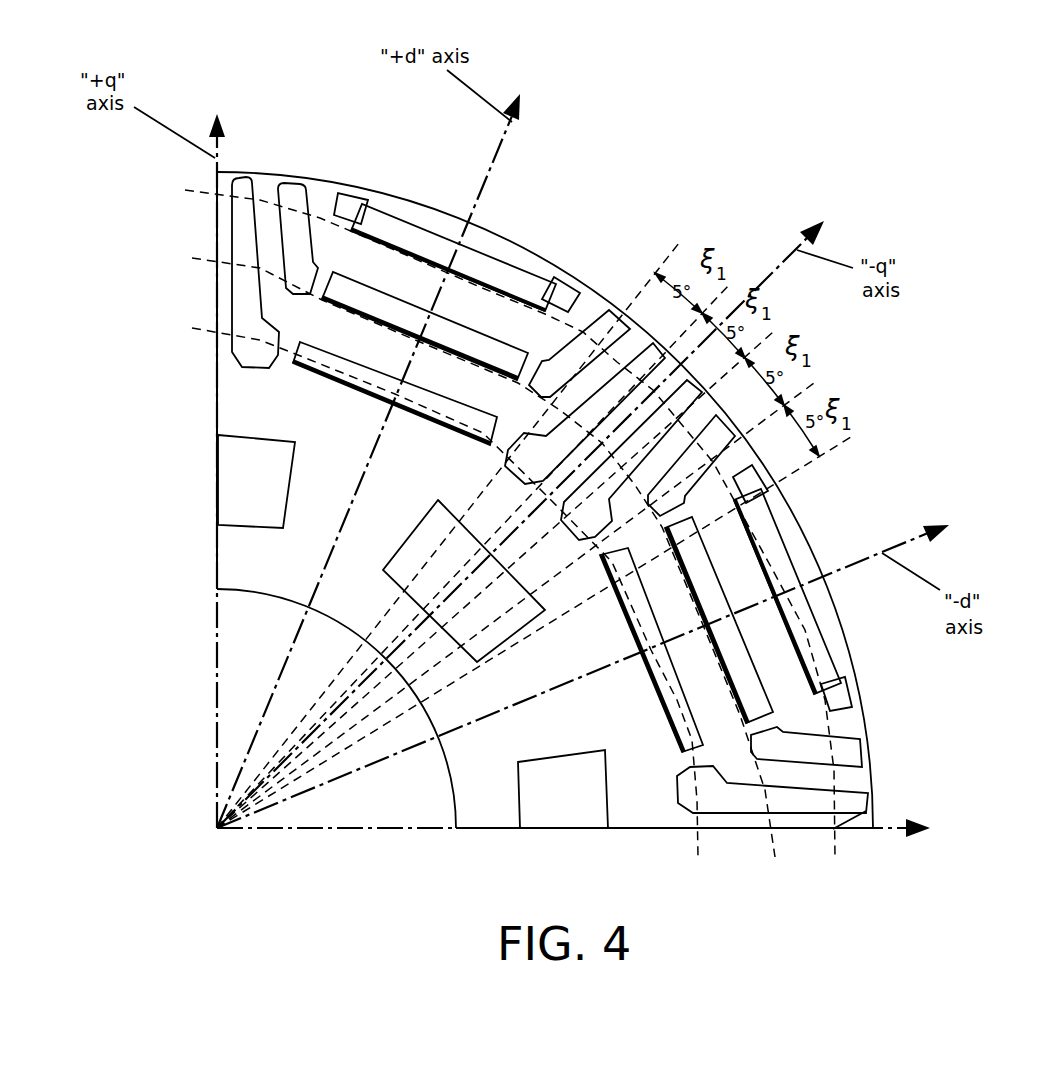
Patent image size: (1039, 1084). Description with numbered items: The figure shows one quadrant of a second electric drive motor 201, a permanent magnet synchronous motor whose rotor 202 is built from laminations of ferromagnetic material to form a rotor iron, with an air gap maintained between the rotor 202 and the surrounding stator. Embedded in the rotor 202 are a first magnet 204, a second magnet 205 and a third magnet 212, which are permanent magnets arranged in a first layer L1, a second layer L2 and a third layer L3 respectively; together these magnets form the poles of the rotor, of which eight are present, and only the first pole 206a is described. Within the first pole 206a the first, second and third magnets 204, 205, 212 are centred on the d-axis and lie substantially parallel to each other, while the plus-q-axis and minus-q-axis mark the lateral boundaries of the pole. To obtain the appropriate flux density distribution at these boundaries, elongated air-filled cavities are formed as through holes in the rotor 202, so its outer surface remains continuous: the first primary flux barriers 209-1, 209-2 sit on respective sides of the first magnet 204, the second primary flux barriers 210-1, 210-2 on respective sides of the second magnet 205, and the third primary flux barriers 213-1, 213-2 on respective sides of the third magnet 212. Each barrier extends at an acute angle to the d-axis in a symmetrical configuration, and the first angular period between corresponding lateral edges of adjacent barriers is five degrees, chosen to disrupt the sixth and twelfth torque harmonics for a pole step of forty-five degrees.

The second electric drive motor 201 is at (776, 195).
The rotor 202 is at (197, 244).
The first magnet 204 is at (382, 233).
The second magnet 205 is at (373, 302).
The first pole 206a is at (508, 187).
The first primary flux barrier 209-1 is at (252, 177).
The first primary flux barrier 209-2 is at (652, 350).
The second primary flux barrier 210-1 is at (305, 188).
The second primary flux barrier 210-2 is at (608, 312).
The third magnet 212 is at (345, 378).
The third primary flux barrier 213-1 is at (352, 198).
The third primary flux barrier 213-2 is at (568, 290).
The first layer L1 is at (450, 606).
The second layer L2 is at (486, 577).
The third layer L3 is at (513, 537).